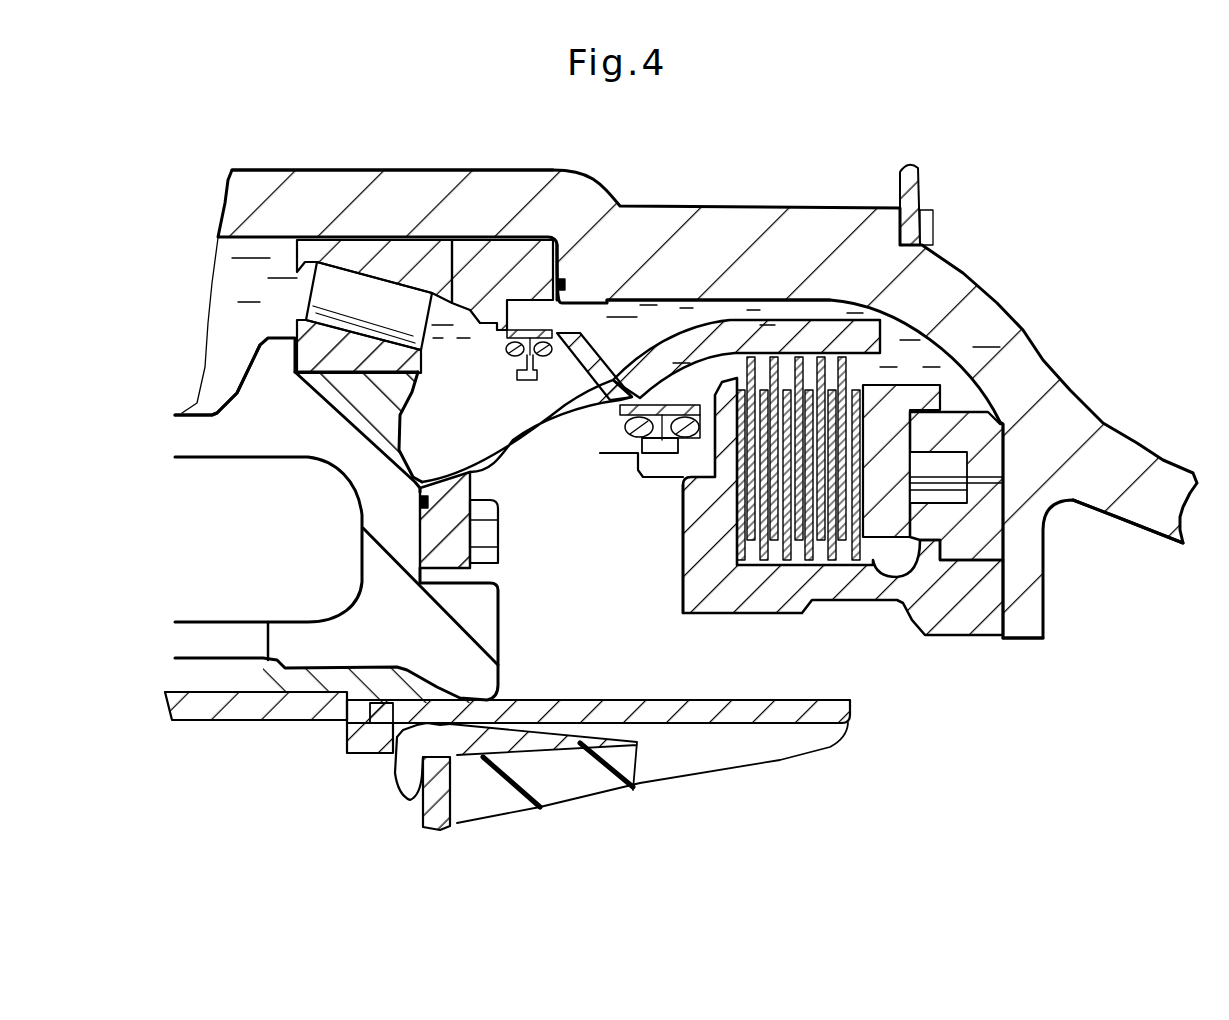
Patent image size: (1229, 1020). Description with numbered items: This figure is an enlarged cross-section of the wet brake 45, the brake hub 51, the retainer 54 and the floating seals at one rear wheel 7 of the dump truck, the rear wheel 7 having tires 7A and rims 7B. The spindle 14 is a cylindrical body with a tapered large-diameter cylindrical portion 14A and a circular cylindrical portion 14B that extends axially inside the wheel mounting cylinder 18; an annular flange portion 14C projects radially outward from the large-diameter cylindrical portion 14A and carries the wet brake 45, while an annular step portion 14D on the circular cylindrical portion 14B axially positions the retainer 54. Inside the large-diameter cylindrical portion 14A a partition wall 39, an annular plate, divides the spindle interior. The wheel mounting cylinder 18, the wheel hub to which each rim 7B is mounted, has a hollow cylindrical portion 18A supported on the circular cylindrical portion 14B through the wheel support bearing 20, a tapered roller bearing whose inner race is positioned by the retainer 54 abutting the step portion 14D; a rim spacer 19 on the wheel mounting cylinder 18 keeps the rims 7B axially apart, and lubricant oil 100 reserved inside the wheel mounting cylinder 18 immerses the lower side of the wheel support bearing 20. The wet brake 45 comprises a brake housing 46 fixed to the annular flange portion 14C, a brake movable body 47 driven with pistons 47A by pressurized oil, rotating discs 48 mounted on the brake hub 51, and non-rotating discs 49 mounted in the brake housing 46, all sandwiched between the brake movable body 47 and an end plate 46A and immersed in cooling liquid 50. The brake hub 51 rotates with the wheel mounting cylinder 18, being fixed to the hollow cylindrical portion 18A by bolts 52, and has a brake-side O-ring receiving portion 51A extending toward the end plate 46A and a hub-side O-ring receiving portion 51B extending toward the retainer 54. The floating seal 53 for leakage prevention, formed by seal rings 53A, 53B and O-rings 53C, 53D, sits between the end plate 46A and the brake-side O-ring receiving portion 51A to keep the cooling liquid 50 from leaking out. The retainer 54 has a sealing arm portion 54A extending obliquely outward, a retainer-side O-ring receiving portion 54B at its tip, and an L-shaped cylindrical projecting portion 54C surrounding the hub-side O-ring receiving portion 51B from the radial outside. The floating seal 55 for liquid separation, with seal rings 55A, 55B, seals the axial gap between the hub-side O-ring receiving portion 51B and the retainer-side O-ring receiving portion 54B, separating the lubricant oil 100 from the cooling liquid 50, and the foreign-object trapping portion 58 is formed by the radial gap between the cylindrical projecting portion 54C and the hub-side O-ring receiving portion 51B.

The rear wheel 7 is at (598, 785).
The tire 7A is at (485, 803).
The rim 7B is at (707, 717).
The spindle 14 is at (1012, 320).
The large-diameter cylindrical portion 14A is at (1130, 458).
The circular cylindrical portion 14B is at (275, 205).
The annular flange portion 14C is at (1027, 607).
The annular step portion 14D is at (577, 287).
The wheel mounting cylinder 18 is at (353, 643).
The hollow cylindrical portion 18A is at (213, 423).
The rim spacer 19 is at (222, 710).
The wheel support bearing 20 is at (372, 285).
The partition wall 39 is at (910, 190).
The wet brake 45 is at (897, 385).
The brake housing 46 is at (960, 620).
The end plate 46A is at (717, 580).
The brake movable body 47 is at (1020, 440).
The piston 47A is at (943, 493).
The rotating disc 48 is at (778, 357).
The non-rotating disc 49 is at (785, 540).
The cooling liquid 50 is at (605, 305).
The brake hub 51 is at (650, 337).
The brake-side O-ring receiving portion 51A is at (633, 447).
The hub-side O-ring receiving portion 51B is at (570, 400).
The bolt 52 is at (483, 543).
The floating seal for leakage prevention 53 is at (683, 357).
The seal ring 53A is at (700, 405).
The seal ring 53B is at (635, 405).
The O-ring 53C is at (666, 403).
The O-ring 53D is at (647, 440).
The retainer 54 is at (477, 263).
The sealing arm portion 54A is at (513, 347).
The retainer-side O-ring receiving portion 54B is at (517, 380).
The cylindrical projecting portion 54C is at (560, 387).
The floating seal for liquid separation 55 is at (523, 225).
The seal ring 55A is at (532, 325).
The seal ring 55B is at (513, 330).
The foreign-object trapping portion 58 is at (531, 385).
The lubricant oil 100 is at (237, 267).